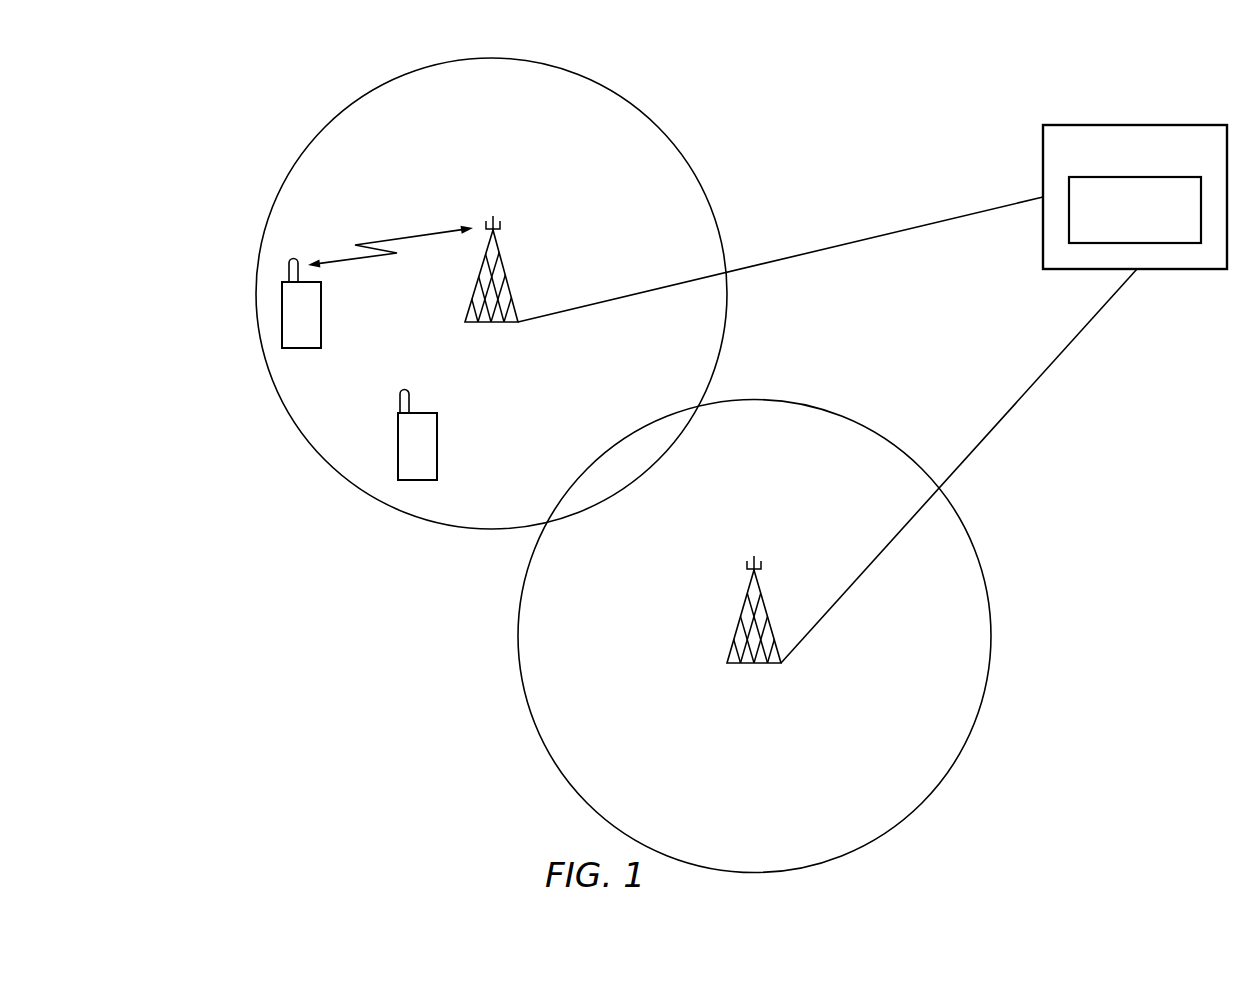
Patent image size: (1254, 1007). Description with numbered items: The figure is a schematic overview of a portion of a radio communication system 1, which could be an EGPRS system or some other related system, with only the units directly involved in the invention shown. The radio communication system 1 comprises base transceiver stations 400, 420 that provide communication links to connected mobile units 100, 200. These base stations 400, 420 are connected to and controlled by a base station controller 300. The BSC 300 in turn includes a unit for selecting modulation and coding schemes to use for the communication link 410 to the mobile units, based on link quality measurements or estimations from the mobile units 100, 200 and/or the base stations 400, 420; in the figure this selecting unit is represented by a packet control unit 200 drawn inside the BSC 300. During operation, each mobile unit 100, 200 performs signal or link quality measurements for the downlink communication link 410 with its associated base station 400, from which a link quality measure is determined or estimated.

The radio communication system 1 is at (128, 720).
The mobile unit 100 is at (321, 310).
The mobile unit / packet control unit (PCU) 200 is at (437, 445).
The base station controller (BSC) 300 is at (1137, 125).
The base transceiver station 400 is at (500, 229).
The communication link 410 is at (397, 237).
The base transceiver station 420 is at (761, 568).